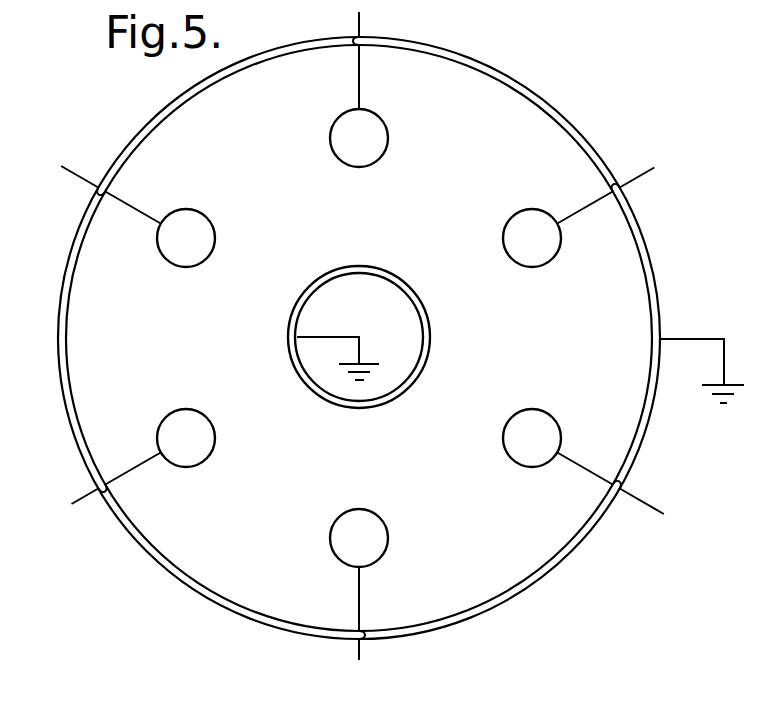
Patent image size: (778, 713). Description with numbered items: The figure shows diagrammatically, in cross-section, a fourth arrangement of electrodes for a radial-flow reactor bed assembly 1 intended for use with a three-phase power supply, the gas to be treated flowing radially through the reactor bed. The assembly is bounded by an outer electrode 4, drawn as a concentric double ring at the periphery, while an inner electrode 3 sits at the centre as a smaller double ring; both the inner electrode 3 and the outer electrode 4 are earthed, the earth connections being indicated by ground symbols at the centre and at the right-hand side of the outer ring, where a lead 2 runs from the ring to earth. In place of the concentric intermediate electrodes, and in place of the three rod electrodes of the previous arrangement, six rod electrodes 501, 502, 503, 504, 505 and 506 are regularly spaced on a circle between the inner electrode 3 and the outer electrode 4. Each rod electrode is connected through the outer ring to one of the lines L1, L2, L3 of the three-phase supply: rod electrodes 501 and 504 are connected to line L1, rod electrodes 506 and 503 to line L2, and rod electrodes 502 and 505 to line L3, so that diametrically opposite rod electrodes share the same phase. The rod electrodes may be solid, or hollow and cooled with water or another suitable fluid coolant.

The radial-flow reactor bed assembly 1 is at (401, 338).
The chamber wall 2 is at (617, 289).
The inner electrode 3 is at (390, 283).
The outer electrode 4 is at (647, 422).
The rod electrode 501 is at (376, 141).
The rod electrode 502 is at (523, 237).
The rod electrode 503 is at (522, 440).
The rod electrode 504 is at (375, 540).
The rod electrode 505 is at (205, 438).
The rod electrode 506 is at (205, 233).
The power supply line phase 1 L1 is at (374, 346).
The power supply line phase 2 L2 is at (377, 328).
The power supply line phase 3 L3 is at (350, 325).